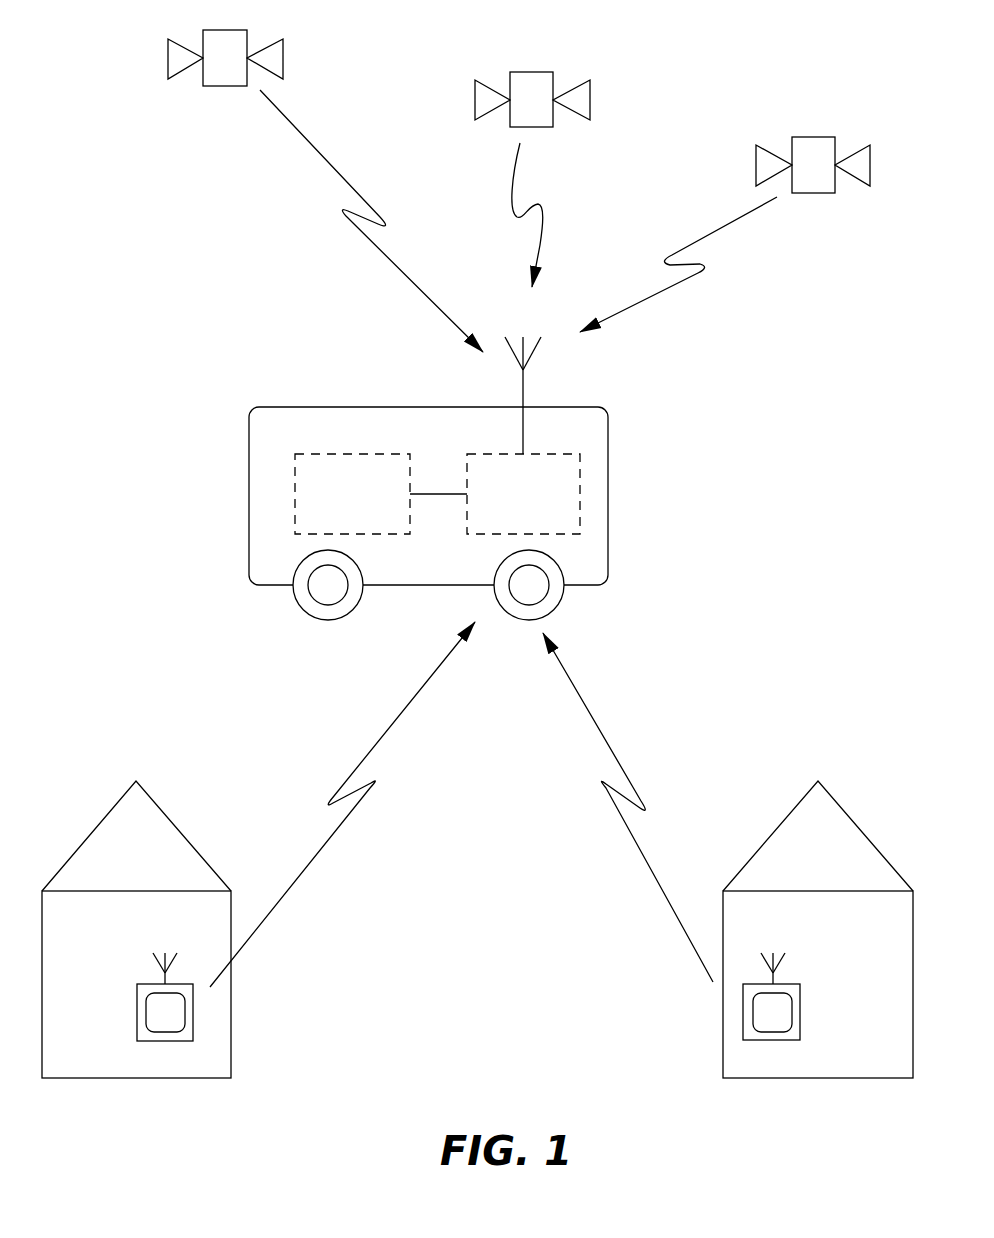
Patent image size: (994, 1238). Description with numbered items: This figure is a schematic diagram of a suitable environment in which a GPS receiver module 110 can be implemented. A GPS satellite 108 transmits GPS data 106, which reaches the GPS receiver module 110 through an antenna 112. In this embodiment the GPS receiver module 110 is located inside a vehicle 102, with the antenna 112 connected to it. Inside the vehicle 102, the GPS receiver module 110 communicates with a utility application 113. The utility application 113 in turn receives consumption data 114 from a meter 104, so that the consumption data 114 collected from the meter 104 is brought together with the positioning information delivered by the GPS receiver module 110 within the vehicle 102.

The vehicle 102 is at (428, 459).
The meter 104 is at (193, 1013).
The GPS data 106 is at (518, 221).
The GPS satellite 108 is at (519, 101).
The GPS receiver module 110 is at (523, 484).
The antenna 112 is at (523, 376).
The utility application 113 is at (381, 484).
The consumption data 114 is at (461, 804).